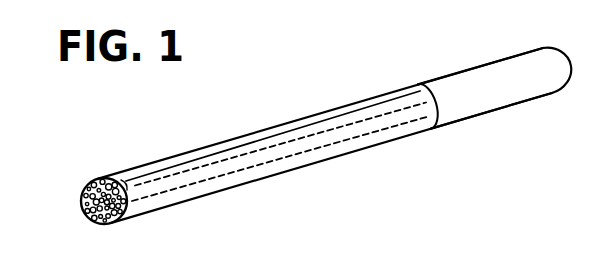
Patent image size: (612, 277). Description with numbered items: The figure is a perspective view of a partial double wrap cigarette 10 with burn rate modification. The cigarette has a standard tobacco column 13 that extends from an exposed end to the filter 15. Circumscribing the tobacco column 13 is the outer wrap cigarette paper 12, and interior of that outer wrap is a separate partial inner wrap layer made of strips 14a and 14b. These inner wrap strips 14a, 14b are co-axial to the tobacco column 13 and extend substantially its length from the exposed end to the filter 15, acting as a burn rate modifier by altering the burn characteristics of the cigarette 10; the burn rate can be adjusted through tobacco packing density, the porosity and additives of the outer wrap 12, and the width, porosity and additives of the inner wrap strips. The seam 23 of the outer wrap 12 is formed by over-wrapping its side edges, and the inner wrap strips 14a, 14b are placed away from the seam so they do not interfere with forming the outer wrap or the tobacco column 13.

The partial double wrap cigarette 10 is at (293, 111).
The outer wrap cigarette paper 12 is at (214, 185).
The tobacco column 13 is at (106, 226).
The partial inner wrap layer strip 14a is at (80, 204).
The partial inner wrap layer strip 14b is at (128, 183).
The filter 15 is at (472, 85).
The seam 23 is at (348, 108).